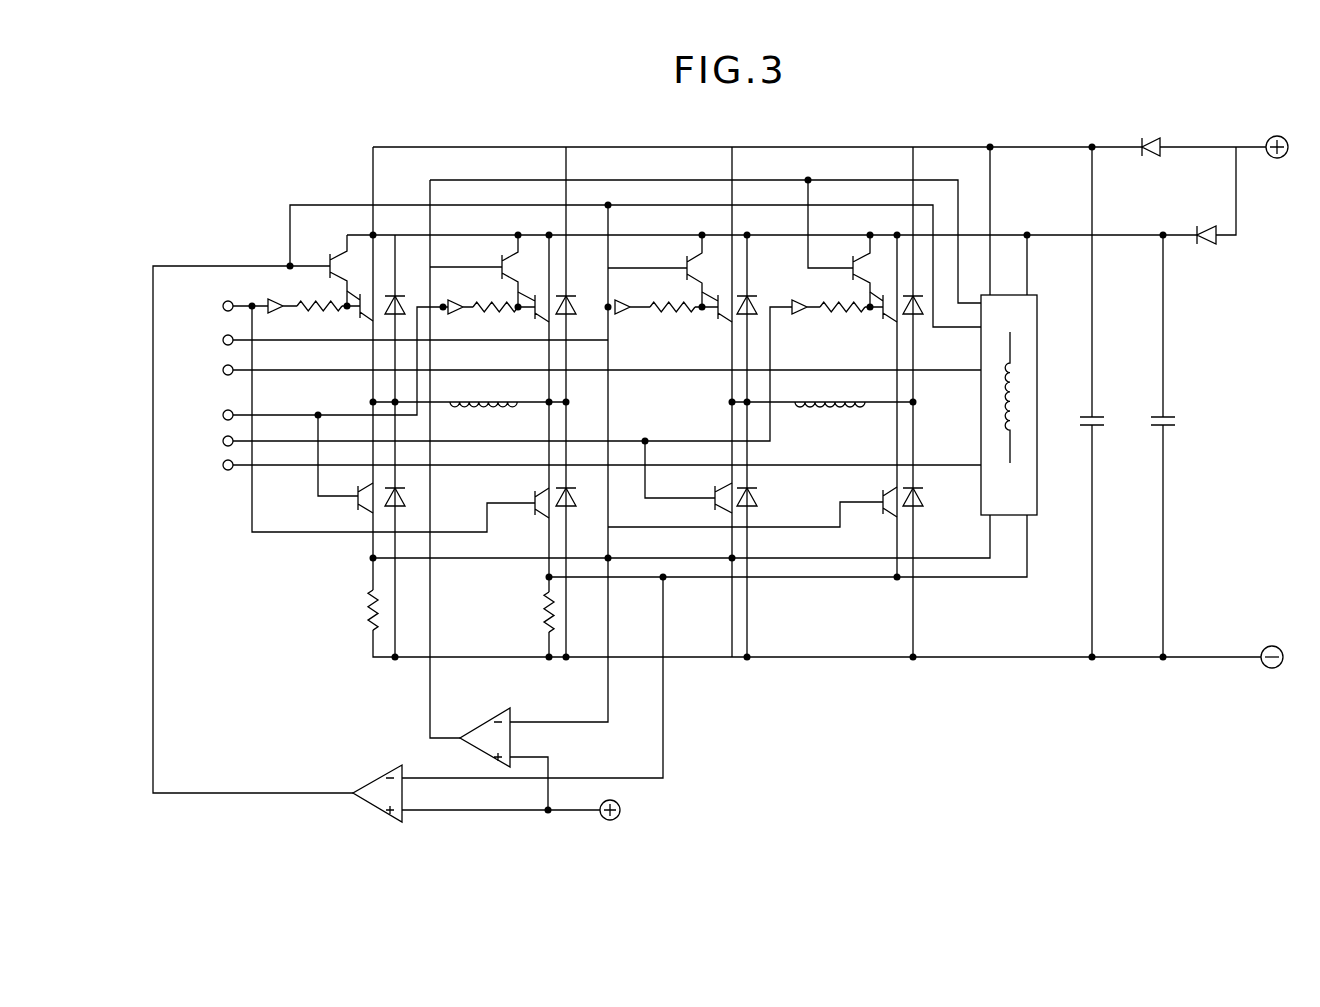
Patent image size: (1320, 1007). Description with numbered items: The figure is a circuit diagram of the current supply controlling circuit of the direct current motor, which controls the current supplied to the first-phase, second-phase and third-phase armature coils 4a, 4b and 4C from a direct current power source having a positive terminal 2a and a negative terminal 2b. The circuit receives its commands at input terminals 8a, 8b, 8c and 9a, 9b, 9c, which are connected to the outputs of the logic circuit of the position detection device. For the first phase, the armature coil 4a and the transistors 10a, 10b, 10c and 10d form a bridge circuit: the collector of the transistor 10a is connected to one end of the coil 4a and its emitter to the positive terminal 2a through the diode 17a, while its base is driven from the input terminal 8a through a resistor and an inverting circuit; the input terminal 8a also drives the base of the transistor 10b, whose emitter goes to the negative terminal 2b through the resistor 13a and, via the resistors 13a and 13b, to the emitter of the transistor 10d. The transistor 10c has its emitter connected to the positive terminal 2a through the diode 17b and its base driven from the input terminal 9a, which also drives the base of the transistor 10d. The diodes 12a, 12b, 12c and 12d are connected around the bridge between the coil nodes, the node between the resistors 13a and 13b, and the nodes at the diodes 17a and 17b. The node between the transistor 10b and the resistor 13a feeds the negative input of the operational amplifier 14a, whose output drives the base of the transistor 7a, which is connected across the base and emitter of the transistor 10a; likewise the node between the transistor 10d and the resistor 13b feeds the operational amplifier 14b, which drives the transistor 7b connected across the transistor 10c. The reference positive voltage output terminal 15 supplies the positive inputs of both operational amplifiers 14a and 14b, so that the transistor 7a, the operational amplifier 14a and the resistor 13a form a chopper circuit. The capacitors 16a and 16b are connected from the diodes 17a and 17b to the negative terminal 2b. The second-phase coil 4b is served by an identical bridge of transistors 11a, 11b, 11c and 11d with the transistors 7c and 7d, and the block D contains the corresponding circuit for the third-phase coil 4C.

The positive terminal 2a is at (1280, 158).
The negative terminal 2b is at (1268, 668).
The first-phase armature coil 4a is at (473, 418).
The second-phase armature coil 4b is at (815, 418).
The third-phase armature coil 4C is at (1018, 390).
The transistor 7a is at (344, 250).
The transistor 7b is at (500, 257).
The transistor 7c is at (684, 259).
The transistor 7d is at (852, 260).
The input terminal 8a is at (223, 307).
The input terminal 8b is at (223, 341).
The input terminal 8c is at (223, 371).
The input terminal 9a is at (223, 416).
The input terminal 9b is at (223, 442).
The input terminal 9c is at (223, 466).
The transistor 10a is at (345, 318).
The transistor 10b is at (539, 520).
The transistor 10c is at (525, 316).
The transistor 10d is at (352, 510).
The transistor 11a is at (710, 323).
The transistor 11b is at (880, 516).
The transistor 11c is at (880, 323).
The transistor 11d is at (710, 508).
The diode 12a is at (408, 304).
The diode 12b is at (568, 515).
The diode 12c is at (592, 306).
The diode 12d is at (408, 498).
The resistor 13a is at (540, 612).
The resistor 13b is at (364, 610).
The operational amplifier 14a is at (368, 780).
The operational amplifier 14b is at (490, 720).
The reference positive voltage output terminal 15 is at (620, 812).
The capacitor 16a is at (1094, 428).
The capacitor 16b is at (1166, 428).
The diode 17a is at (1148, 136).
The diode 17b is at (1212, 250).
The block circuit D is at (1038, 320).